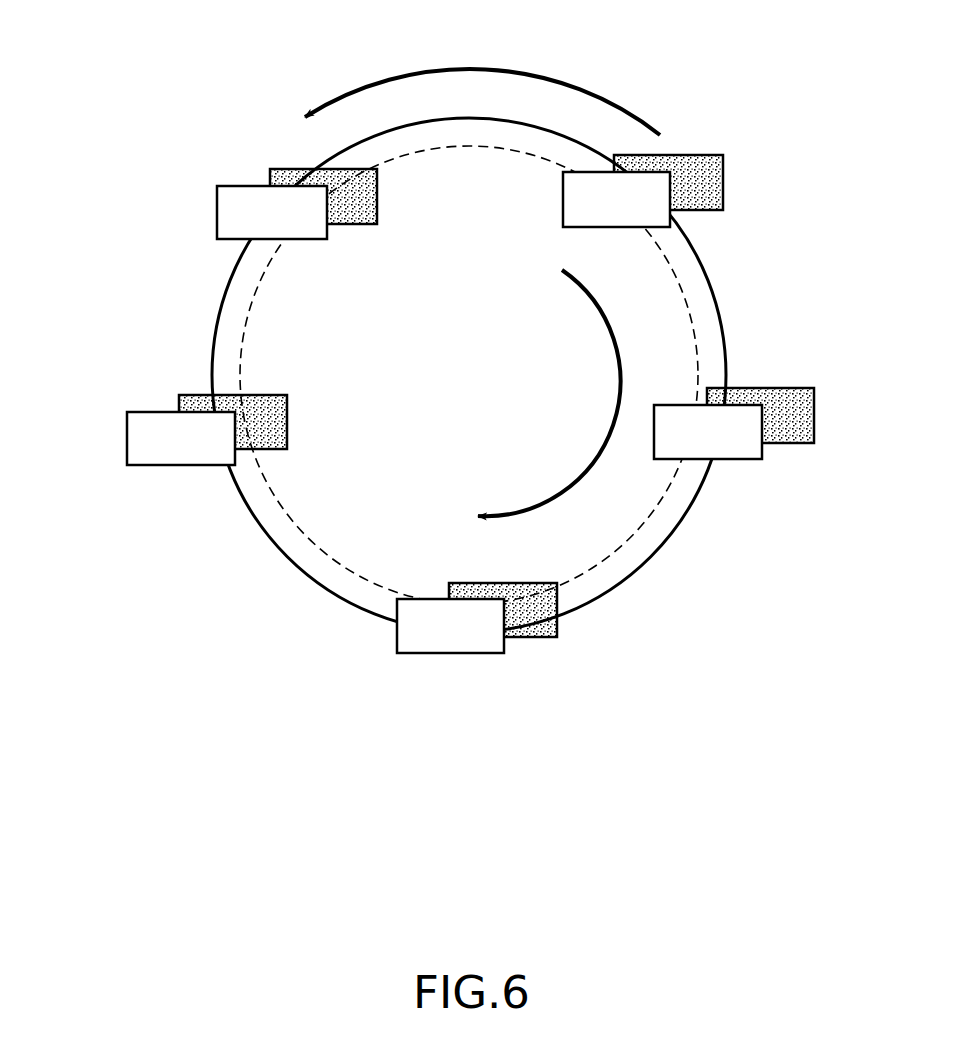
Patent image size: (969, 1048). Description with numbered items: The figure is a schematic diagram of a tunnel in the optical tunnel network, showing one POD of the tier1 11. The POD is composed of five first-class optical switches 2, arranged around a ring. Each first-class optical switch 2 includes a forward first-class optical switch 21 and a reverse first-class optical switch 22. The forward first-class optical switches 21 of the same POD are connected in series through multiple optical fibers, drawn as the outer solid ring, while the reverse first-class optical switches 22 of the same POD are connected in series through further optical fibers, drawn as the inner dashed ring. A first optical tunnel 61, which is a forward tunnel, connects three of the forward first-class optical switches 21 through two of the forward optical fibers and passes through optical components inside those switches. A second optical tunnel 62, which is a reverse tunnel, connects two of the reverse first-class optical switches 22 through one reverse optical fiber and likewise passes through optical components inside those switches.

The tier1 11 is at (165, 508).
The first-class optical switch 2 is at (765, 472).
The forward first-class optical switch 21 is at (708, 470).
The reverse first-class optical switch 22 is at (800, 444).
The first optical tunnel 61 is at (580, 457).
The second optical tunnel 62 is at (565, 80).